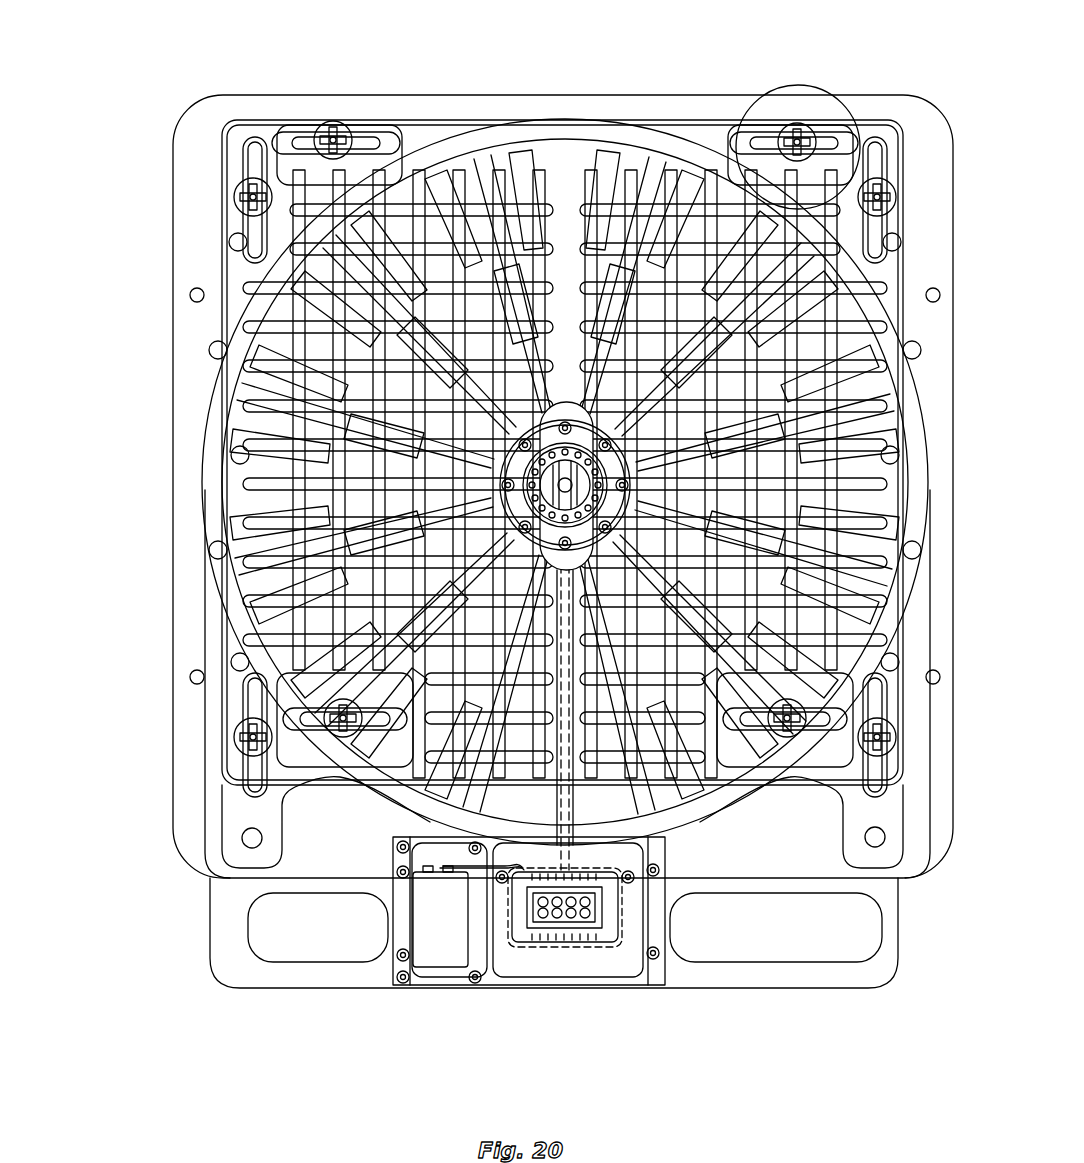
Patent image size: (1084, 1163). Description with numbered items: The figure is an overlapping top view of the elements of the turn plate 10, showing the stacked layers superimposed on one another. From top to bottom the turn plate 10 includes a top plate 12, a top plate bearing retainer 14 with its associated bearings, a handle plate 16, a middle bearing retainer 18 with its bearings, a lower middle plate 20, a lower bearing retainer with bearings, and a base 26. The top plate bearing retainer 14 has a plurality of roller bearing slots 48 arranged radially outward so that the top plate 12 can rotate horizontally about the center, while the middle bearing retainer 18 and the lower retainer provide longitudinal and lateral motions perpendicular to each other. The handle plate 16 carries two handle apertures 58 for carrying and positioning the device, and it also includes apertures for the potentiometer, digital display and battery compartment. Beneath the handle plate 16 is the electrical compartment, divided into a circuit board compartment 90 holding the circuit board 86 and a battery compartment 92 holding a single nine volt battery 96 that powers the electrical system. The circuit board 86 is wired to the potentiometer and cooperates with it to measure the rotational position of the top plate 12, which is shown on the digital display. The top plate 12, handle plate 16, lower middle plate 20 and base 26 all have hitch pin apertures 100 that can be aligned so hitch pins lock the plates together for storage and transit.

The turn plate 10 is at (150, 70).
The top plate 12 is at (198, 780).
The top plate bearing retainer 14 is at (582, 136).
The handle plate 16 is at (230, 915).
The middle bearing retainer 18 is at (370, 120).
The lower middle plate 20 is at (921, 868).
The base 26 is at (168, 660).
The roller bearing slots 48 is at (262, 420).
The handle apertures 58 is at (286, 958).
The circuit board 86 is at (592, 942).
The circuit board compartment 90 is at (622, 947).
The battery compartment 92 is at (440, 967).
The battery 96 is at (412, 915).
The hitch pin apertures 100 is at (262, 838).